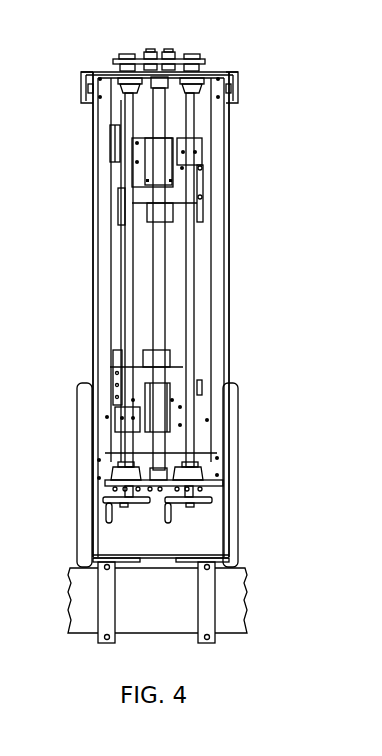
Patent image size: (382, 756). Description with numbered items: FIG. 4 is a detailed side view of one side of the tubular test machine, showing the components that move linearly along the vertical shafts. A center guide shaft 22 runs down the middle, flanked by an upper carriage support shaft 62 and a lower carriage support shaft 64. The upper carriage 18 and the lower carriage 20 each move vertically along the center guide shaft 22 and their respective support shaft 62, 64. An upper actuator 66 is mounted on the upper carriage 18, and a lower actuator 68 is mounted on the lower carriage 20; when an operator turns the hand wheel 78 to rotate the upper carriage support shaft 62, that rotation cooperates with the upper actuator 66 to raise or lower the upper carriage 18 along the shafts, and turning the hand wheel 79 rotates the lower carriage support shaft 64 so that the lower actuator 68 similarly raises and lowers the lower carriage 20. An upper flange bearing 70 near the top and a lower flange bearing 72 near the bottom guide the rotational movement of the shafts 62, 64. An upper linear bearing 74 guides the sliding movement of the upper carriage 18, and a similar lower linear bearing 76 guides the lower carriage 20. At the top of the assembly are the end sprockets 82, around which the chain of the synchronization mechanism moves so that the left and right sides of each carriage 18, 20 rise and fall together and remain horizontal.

The upper carriage 18 is at (175, 193).
The lower carriage 20 is at (138, 373).
The center guide shaft 22 is at (163, 310).
The upper carriage support shaft 62 is at (190, 268).
The lower carriage support shaft 64 is at (123, 268).
The upper actuator 66 is at (192, 158).
The lower actuator 68 is at (118, 426).
The upper flange bearing 70 is at (119, 97).
The lower flange bearing 72 is at (100, 485).
The upper linear bearing 74 is at (150, 164).
The lower linear bearing 76 is at (165, 405).
The hand wheel 78 is at (203, 505).
The hand wheel 79 is at (103, 513).
The end sprockets 82 is at (120, 56).